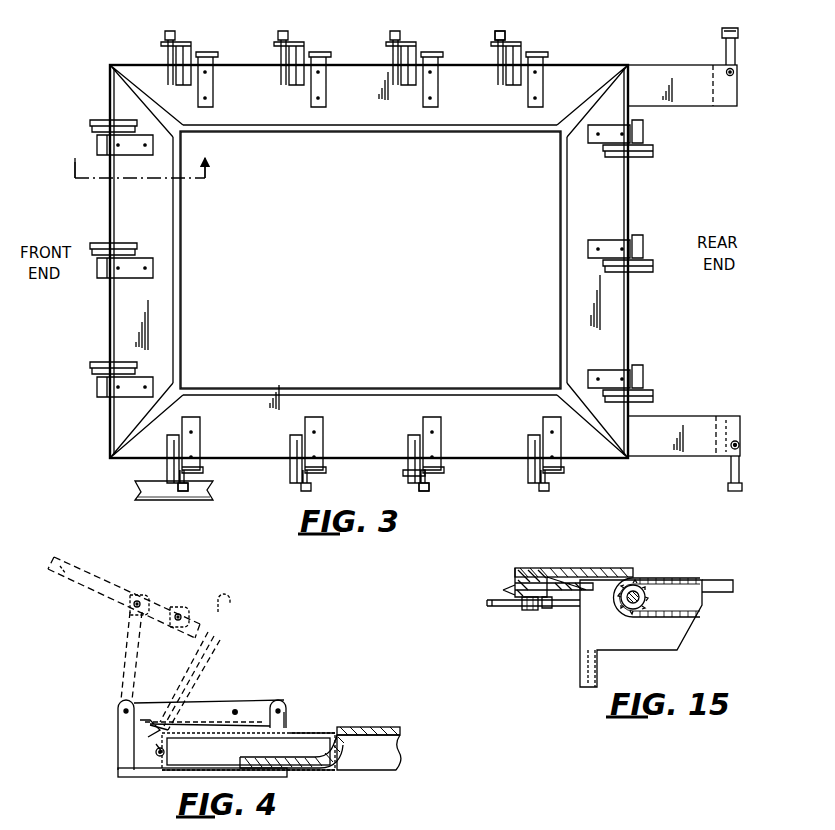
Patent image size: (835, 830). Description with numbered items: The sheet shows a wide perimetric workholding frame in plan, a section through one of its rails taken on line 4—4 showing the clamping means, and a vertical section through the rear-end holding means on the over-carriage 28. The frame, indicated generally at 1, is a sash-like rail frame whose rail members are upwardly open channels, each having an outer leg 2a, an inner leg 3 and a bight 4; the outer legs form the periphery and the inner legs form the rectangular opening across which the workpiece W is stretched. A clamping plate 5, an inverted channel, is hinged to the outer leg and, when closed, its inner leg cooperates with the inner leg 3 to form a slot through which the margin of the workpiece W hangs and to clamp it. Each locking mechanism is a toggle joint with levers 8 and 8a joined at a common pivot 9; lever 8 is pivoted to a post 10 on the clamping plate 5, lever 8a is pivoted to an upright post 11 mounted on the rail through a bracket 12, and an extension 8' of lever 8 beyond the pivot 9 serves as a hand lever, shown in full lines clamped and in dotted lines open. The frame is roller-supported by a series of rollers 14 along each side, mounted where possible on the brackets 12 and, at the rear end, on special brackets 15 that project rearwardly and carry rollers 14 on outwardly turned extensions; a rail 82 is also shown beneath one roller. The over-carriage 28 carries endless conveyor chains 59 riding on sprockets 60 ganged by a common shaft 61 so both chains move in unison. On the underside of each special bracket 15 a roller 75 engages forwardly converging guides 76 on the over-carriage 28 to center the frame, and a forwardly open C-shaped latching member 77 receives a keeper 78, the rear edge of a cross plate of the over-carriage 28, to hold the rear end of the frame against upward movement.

In FIG. 3, the screen frame assembly 1 is at (112, 330).
In FIG. 4, the screen frame assembly 1 is at (311, 716).
In FIG. 4, the outer leg 2a is at (162, 761).
In FIG. 3, the inner leg 3 is at (180, 256).
In FIG. 4, the inner leg 3 is at (339, 747).
In FIG. 3, the bight 4 is at (138, 158).
In FIG. 4, the bight 4 is at (295, 772).
In FIG. 3, the clamping plate 5 is at (596, 193).
In FIG. 4, the clamping plate 5 is at (190, 664).
In FIG. 4, the toggle lever 8 is at (167, 647).
In FIG. 3, the extension 8' is at (382, 261).
In FIG. 4, the extension 8' is at (53, 578).
In FIG. 4, the toggle lever 8a is at (128, 632).
In FIG. 4, the common pivot 9 is at (234, 708).
In FIG. 4, the post 10 is at (283, 713).
In FIG. 4, the upright post 11 is at (120, 745).
In FIG. 3, the bracket 12 is at (400, 478).
In FIG. 4, the bracket 12 is at (120, 775).
In FIG. 3, the roller 14 is at (506, 33).
In FIG. 3, the special bracket 15 is at (696, 100).
In FIG. 15, the special bracket 15 is at (593, 568).
In FIG. 15, the over-carriage 28 is at (618, 648).
In FIG. 15, the endless conveyor chain 59 is at (691, 577).
In FIG. 15, the sprocket 60 is at (650, 596).
In FIG. 15, the common shaft 61 is at (623, 607).
In FIG. 3, the roller 75 is at (742, 441).
In FIG. 15, the roller 75 is at (527, 608).
In FIG. 15, the guide 76 is at (494, 606).
In FIG. 3, the latching member 77 is at (730, 421).
In FIG. 15, the latching member 77 is at (550, 607).
In FIG. 15, the keeper 78 is at (529, 568).
In FIG. 3, the rail 82 is at (212, 490).
In FIG. 4, the workpiece W is at (385, 729).